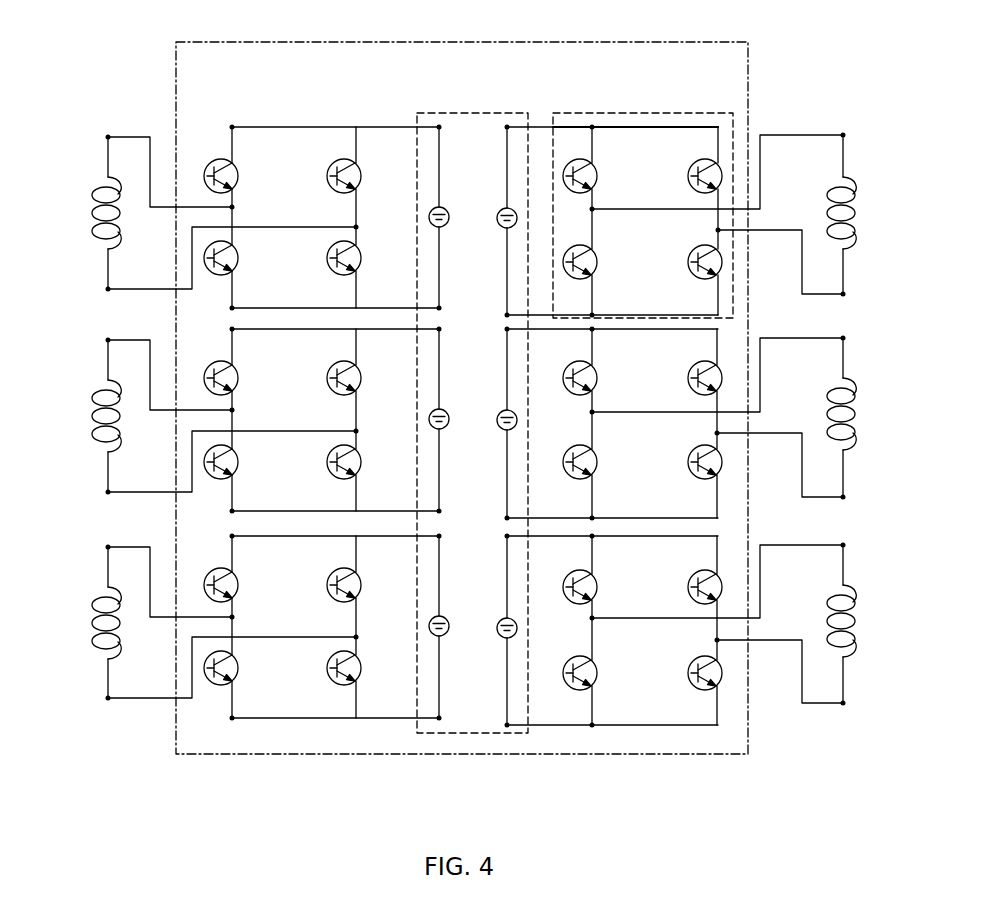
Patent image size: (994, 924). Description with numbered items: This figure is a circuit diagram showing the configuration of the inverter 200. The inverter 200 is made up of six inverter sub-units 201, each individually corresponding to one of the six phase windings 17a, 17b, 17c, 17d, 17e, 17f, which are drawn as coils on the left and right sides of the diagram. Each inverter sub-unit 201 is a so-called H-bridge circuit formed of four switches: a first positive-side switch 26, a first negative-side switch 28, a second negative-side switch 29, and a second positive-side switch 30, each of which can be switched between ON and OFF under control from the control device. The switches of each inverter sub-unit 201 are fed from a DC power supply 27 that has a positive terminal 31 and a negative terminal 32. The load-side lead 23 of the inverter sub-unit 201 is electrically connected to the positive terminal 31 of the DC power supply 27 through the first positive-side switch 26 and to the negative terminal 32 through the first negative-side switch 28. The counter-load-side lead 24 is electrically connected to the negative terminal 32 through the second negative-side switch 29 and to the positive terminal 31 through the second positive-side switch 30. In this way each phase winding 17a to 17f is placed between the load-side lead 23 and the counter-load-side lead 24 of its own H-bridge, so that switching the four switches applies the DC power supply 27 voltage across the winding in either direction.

The inverter 200 is at (752, 52).
The DC power supply 27 is at (480, 112).
The inverter sub-unit 201 is at (640, 112).
The first positive-side switch 26 is at (596, 178).
The second positive-side switch 30 is at (690, 178).
The first negative-side switch 28 is at (596, 265).
The second negative-side switch 29 is at (690, 265).
The positive terminal 31 is at (507, 128).
The negative terminal 32 is at (507, 315).
The load-side lead 23 is at (825, 135).
The counter-load-side lead 24 is at (825, 294).
The phase winding 17a is at (853, 180).
The phase winding 17b is at (853, 380).
The phase winding 17c is at (853, 587).
The phase winding 17d is at (100, 182).
The phase winding 17e is at (100, 385).
The phase winding 17f is at (100, 592).